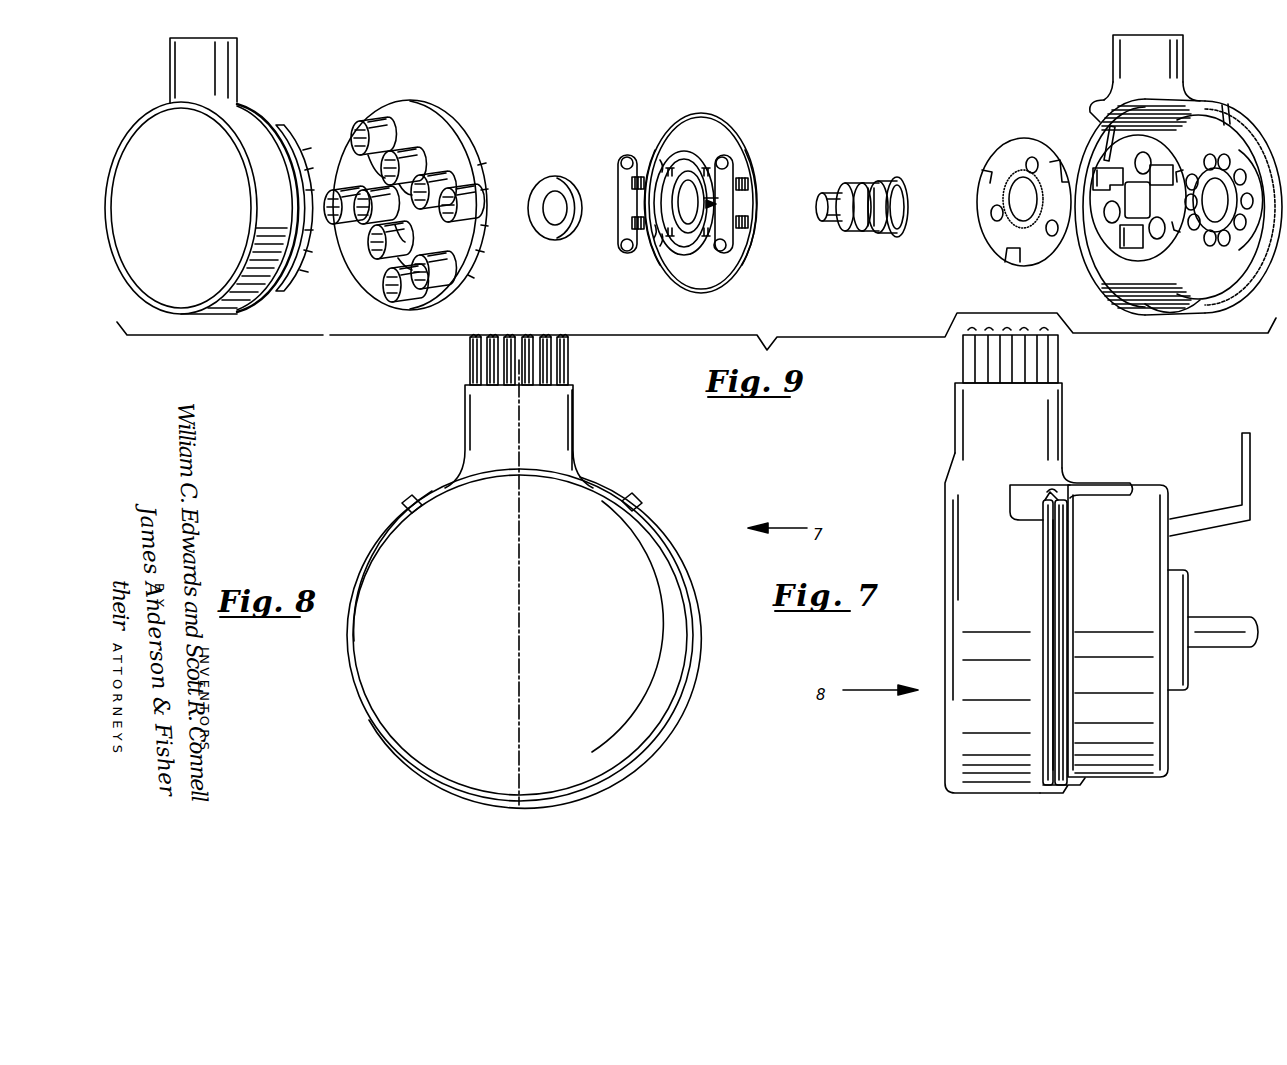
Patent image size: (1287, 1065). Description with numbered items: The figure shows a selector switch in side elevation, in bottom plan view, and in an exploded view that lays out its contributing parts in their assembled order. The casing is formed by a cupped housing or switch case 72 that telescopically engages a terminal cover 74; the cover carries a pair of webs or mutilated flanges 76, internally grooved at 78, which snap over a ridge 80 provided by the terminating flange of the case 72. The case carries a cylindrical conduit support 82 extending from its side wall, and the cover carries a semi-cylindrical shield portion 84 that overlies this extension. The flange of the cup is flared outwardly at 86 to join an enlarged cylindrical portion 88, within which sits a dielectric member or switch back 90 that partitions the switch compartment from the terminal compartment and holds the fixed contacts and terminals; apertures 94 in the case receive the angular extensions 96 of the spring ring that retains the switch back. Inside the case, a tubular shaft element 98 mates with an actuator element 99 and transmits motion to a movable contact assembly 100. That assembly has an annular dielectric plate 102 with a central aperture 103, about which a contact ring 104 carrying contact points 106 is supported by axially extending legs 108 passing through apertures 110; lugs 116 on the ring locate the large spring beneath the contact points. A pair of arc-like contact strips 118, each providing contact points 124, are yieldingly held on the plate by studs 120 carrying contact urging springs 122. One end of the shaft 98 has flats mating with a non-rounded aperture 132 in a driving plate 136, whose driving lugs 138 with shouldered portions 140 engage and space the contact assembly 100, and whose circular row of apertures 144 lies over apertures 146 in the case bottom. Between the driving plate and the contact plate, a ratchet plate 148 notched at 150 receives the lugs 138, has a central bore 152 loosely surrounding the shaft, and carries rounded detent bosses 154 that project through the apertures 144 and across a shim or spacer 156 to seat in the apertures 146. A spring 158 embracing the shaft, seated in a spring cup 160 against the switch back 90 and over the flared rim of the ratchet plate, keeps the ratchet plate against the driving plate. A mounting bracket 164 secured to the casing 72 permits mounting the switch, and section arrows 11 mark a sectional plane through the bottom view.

In FIG. 9, the terminal cover 74 is at (160, 288).
In FIG. 8, the terminal cover 74 is at (648, 572).
In FIG. 7, the terminal cover 74 is at (960, 522).
In FIG. 9, the webs or mutilated flanges 76 is at (272, 137).
In FIG. 8, the webs or mutilated flanges 76 is at (397, 518).
In FIG. 7, the webs or mutilated flanges 76 is at (1018, 600).
In FIG. 9, the internal groove 78 is at (292, 143).
In FIG. 8, the internal groove 78 is at (688, 598).
In FIG. 7, the internal groove 78 is at (1043, 567).
In FIG. 9, the semi-cylindrical shield portion 84 is at (228, 56).
In FIG. 8, the semi-cylindrical shield portion 84 is at (562, 425).
In FIG. 9, the dielectric member (switch back) 90 is at (437, 120).
In FIG. 9, the spring cup 160 is at (552, 178).
In FIG. 9, the movable contact assembly 100 is at (691, 118).
In FIG. 9, the dielectric plate 102 is at (655, 270).
In FIG. 9, the central aperture 103 is at (718, 268).
In FIG. 9, the contact ring 104 is at (713, 157).
In FIG. 9, the contact points 106 is at (690, 160).
In FIG. 9, the axially extending legs 108 is at (668, 207).
In FIG. 9, the apertures 110 is at (655, 238).
In FIG. 9, the axially extending lugs 116 is at (666, 158).
In FIG. 9, the arc-like contact strips 118 is at (620, 205).
In FIG. 9, the rivets or studs 120 is at (632, 223).
In FIG. 9, the contact urging springs 122 is at (652, 172).
In FIG. 9, the contact points 124 is at (622, 162).
In FIG. 9, the spring 158 is at (857, 178).
In FIG. 9, the shaft element or coupler 98 is at (872, 217).
In FIG. 9, the conduit clamp or support 82 is at (1183, 43).
In FIG. 7, the conduit clamp or support 82 is at (1058, 423).
In FIG. 9, the enlarged cylindrical portion 88 is at (1100, 108).
In FIG. 7, the enlarged cylindrical portion 88 is at (1040, 500).
In FIG. 9, the apertures 94 is at (1115, 130).
In FIG. 7, the apertures 94 is at (1056, 507).
In FIG. 9, the cupped housing (switch case) 72 is at (1230, 115).
In FIG. 7, the cupped housing (switch case) 72 is at (1147, 510).
In FIG. 9, the central bore (axially flared rim) 152 is at (1000, 140).
In FIG. 9, the notches 150 is at (992, 170).
In FIG. 9, the shouldered portions 140 is at (1092, 163).
In FIG. 9, the shim or spacer 156 is at (1197, 177).
In FIG. 9, the driving lugs 138 is at (1152, 175).
In FIG. 9, the detent provisions (rounded bosses) 154 is at (994, 216).
In FIG. 9, the ratchet plate 148 is at (997, 250).
In FIG. 9, the apertures 144 is at (1110, 220).
In FIG. 9, the non-rounded aperture 132 is at (1163, 237).
In FIG. 9, the driving plate 136 is at (1143, 300).
In FIG. 9, the ridge (rib) 80 is at (1190, 306).
In FIG. 9, the flared flange portion 86 is at (1232, 290).
In FIG. 7, the flared flange portion 86 is at (1073, 787).
In FIG. 9, the apertures 146 is at (1245, 233).
In FIG. 8, the section line 11 is at (540, 365).
In FIG. 8, the spring ends or angular extensions 96 is at (408, 500).
In FIG. 7, the spring ends or angular extensions 96 is at (1047, 502).
In FIG. 7, the mounting bracket 164 is at (1245, 523).
In FIG. 7, the actuator element (controller) 99 is at (1215, 622).